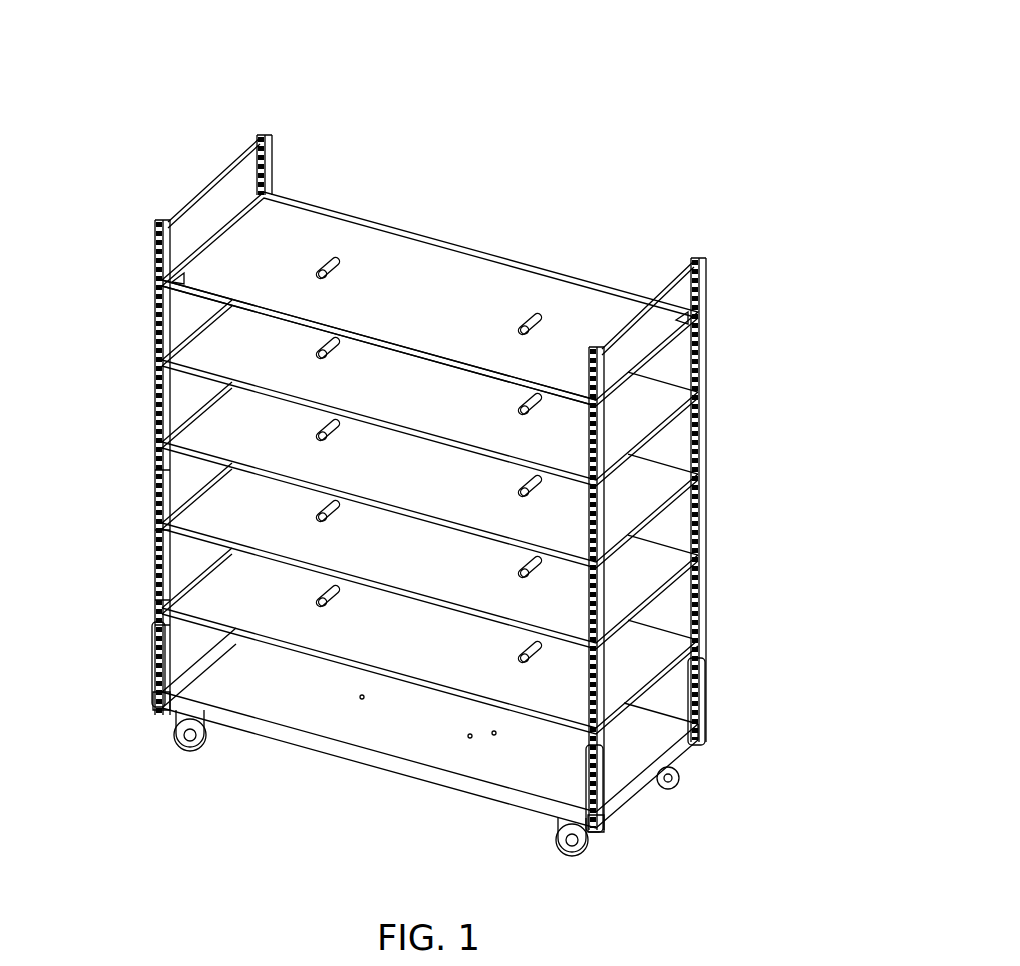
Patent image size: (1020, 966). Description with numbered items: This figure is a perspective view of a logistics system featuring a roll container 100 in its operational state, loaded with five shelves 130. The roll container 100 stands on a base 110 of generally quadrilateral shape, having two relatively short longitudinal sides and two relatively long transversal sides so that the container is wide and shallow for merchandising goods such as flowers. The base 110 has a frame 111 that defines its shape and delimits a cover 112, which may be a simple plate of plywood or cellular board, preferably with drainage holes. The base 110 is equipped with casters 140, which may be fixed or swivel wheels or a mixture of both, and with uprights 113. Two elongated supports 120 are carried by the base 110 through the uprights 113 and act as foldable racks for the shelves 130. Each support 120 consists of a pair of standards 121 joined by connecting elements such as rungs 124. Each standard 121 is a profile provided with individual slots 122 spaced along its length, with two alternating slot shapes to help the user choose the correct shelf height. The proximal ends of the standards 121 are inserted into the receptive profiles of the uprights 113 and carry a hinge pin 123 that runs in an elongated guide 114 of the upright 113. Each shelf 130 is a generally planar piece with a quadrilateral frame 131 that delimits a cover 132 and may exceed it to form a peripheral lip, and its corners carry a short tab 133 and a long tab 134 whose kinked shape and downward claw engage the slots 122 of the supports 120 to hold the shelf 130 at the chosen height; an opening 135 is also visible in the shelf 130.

The roll container 100 is at (470, 200).
The base 110 is at (320, 763).
The frame 111 is at (385, 770).
The cover 112 is at (482, 758).
The upright 113 is at (158, 693).
The guide 114 is at (158, 670).
The support 120 is at (160, 206).
The standard 121 is at (163, 412).
The individual slot 122 is at (163, 500).
The hinge pin 123 is at (158, 652).
The rung 124 is at (216, 189).
The shelf 130 is at (606, 264).
The frame 131 is at (526, 262).
The cover 132 is at (420, 258).
The short tab 133 is at (165, 280).
The long tab 134 is at (699, 318).
The opening 135 is at (332, 258).
The caster 140 is at (188, 750).